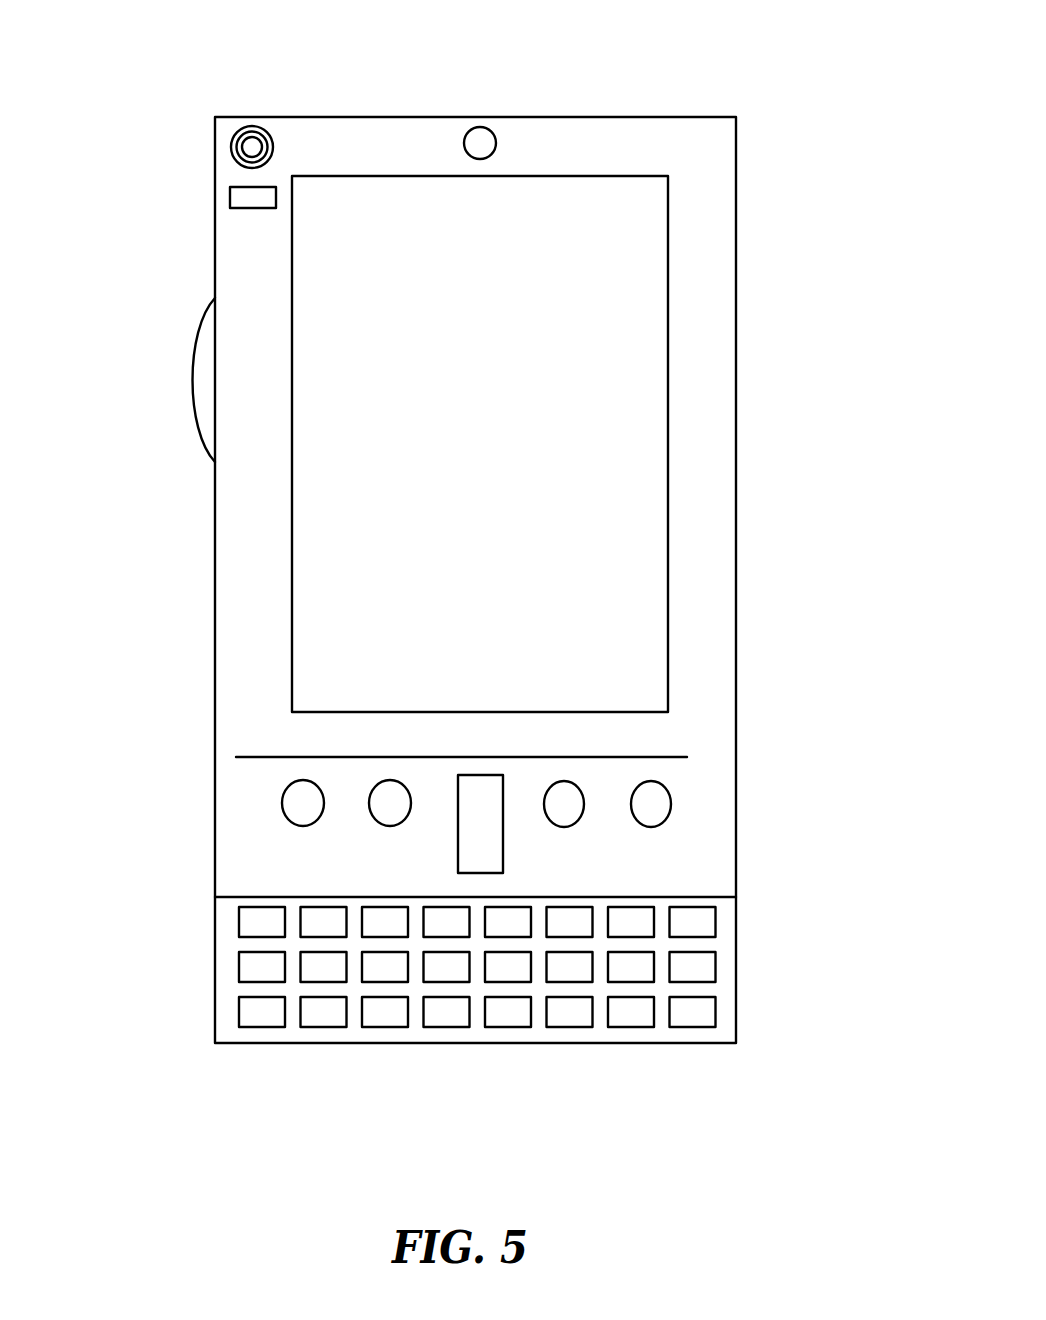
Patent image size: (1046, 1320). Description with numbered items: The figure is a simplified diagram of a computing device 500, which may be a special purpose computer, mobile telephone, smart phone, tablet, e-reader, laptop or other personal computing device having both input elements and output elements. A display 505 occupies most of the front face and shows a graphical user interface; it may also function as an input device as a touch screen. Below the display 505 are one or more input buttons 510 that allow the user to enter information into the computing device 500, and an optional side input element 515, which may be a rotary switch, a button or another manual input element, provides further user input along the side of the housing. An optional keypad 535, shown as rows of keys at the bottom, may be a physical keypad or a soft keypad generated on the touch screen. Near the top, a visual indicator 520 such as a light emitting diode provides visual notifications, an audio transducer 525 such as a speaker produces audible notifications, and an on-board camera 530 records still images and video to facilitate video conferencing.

The computing device 500 is at (723, 137).
The display 505 is at (408, 619).
The input buttons 510 is at (478, 830).
The side input element 515 is at (205, 378).
The visual indicator 520 is at (232, 203).
The audio transducer 525 is at (232, 147).
The on-board camera 530 is at (495, 138).
The keypad 535 is at (225, 1017).